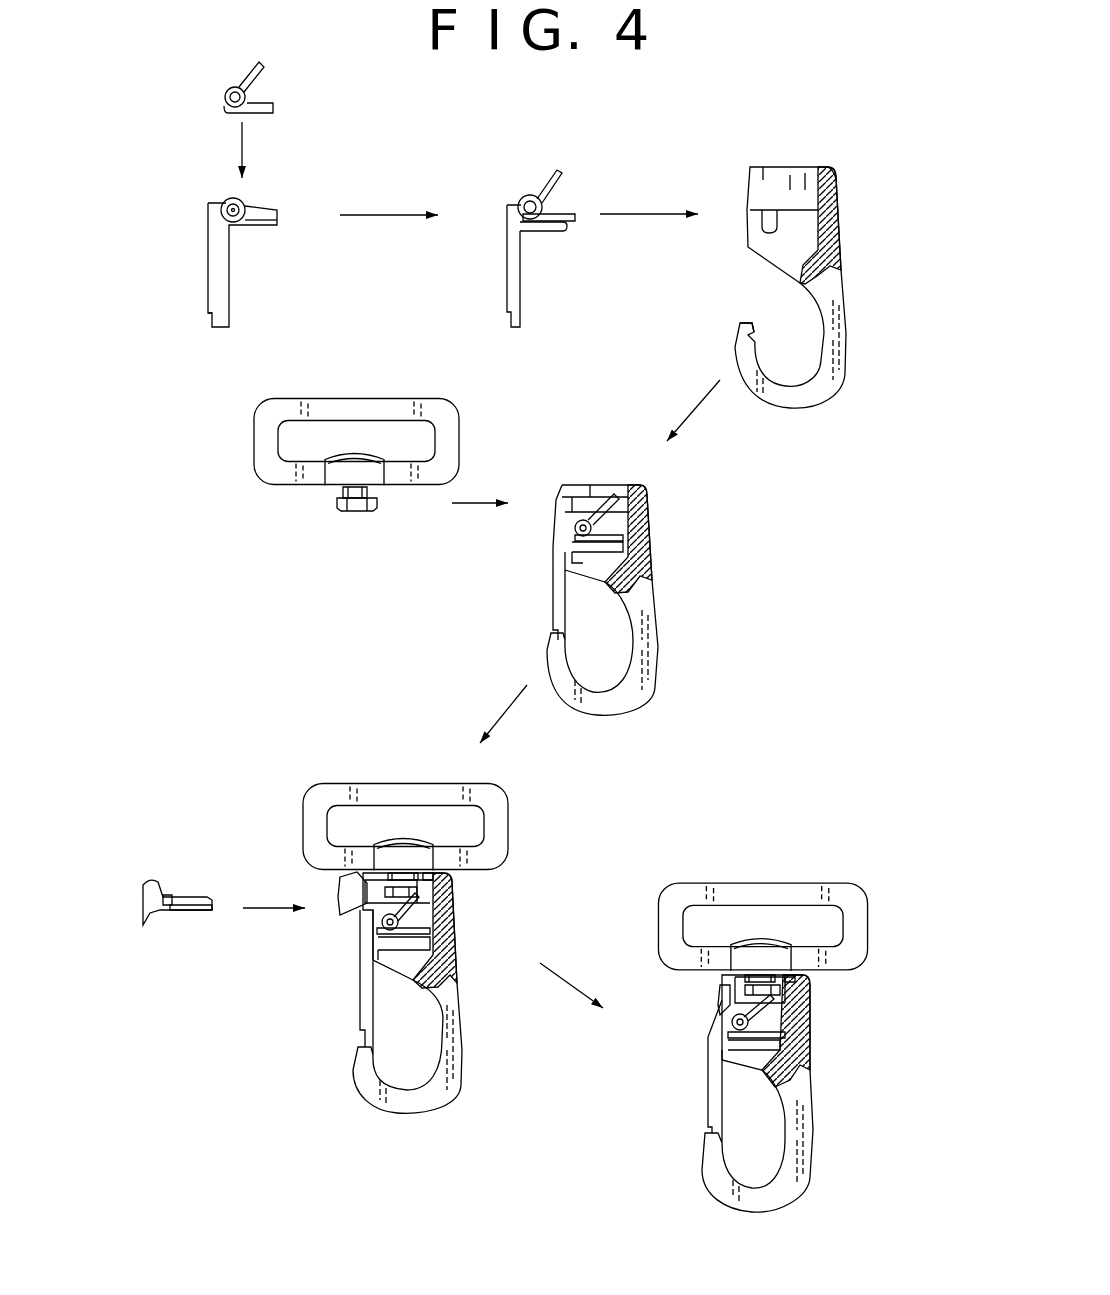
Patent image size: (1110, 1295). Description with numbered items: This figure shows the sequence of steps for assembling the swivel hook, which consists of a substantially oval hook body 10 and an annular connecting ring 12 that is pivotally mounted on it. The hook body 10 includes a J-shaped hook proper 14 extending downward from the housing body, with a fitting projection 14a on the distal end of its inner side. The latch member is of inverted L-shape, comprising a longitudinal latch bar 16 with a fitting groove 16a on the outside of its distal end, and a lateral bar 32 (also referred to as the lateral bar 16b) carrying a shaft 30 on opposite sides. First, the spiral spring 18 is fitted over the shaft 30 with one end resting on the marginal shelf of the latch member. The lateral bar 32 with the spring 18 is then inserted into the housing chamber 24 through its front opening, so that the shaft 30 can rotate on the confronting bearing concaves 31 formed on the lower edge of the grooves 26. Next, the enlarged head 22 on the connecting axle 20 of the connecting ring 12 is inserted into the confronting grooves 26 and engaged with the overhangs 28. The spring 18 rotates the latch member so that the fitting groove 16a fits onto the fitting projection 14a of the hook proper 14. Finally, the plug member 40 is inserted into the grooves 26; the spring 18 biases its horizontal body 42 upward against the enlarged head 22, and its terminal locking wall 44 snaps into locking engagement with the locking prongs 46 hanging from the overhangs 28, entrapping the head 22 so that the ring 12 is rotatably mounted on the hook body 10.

The hook body 10 is at (840, 152).
The connecting ring 12 is at (362, 398).
The hook proper 14 is at (840, 380).
The fitting projection 14a is at (748, 325).
The latch bar 16 is at (205, 255).
The fitting groove 16a is at (212, 318).
The lateral bar 16b is at (250, 240).
The spiral spring 18 is at (246, 92).
The connecting axle 20 is at (340, 493).
The enlarged head 22 is at (372, 508).
The housing chamber 24 is at (762, 197).
The grooves 26 is at (787, 192).
The overhangs 28 is at (772, 170).
The shaft 30 is at (243, 203).
The bearing concaves 31 is at (760, 222).
The lateral bar 32 is at (278, 220).
The plug member 40 is at (155, 880).
The horizontal body 42 is at (175, 893).
The locking wall 44 is at (210, 890).
The locking prongs 46 is at (830, 183).